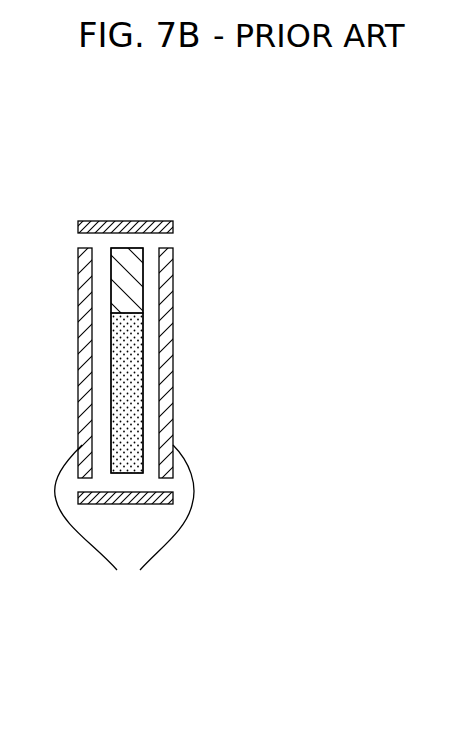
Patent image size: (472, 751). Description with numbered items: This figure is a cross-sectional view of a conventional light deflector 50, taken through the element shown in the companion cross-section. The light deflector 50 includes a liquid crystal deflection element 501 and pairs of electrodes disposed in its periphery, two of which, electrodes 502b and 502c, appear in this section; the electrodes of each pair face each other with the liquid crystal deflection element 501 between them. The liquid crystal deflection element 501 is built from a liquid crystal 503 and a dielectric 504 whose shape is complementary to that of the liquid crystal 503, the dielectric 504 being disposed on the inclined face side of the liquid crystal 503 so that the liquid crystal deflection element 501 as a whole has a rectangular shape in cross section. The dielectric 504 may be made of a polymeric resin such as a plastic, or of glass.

The light deflector 50 is at (113, 160).
The liquid crystal deflection element 501 is at (143, 248).
The electrode 502b is at (152, 222).
The electrode 502c is at (124, 523).
The liquid crystal 503 is at (132, 369).
The dielectric 504 is at (132, 282).